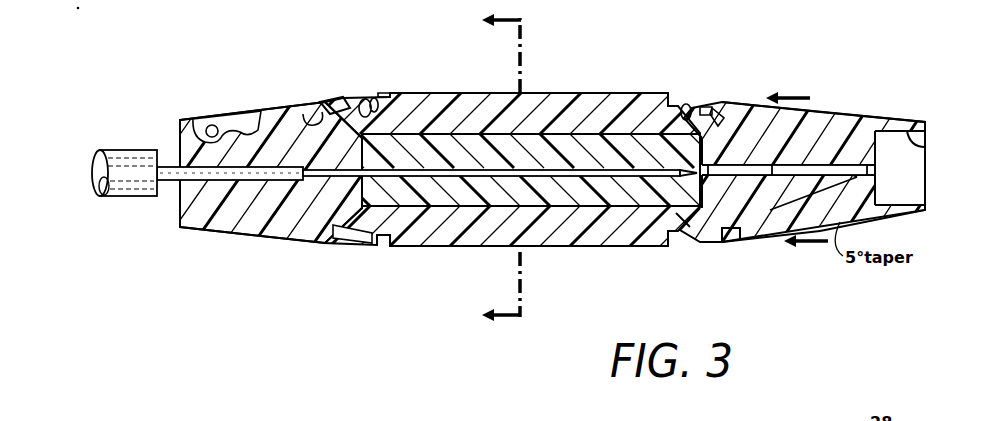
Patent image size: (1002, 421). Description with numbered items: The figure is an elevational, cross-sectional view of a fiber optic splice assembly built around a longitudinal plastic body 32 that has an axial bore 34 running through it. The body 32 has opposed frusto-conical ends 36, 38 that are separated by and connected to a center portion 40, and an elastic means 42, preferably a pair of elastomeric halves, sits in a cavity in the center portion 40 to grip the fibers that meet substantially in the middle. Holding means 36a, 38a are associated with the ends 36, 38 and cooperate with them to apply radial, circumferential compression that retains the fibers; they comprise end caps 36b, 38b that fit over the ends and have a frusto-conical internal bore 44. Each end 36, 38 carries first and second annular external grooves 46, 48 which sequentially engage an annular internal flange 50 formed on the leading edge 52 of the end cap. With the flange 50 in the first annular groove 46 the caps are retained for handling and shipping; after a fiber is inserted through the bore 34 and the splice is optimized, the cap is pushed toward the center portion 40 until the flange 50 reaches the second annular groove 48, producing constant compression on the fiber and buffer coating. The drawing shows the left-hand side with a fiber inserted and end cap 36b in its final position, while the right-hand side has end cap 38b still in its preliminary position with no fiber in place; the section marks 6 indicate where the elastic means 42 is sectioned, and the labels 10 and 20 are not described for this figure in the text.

The cable end 10 is at (162, 221).
The longitudinal body 32 is at (563, 88).
The axial bore 34 is at (690, 227).
The end 36 is at (292, 66).
The holding means 36a is at (258, 107).
The end cap 36b is at (338, 105).
The end 38 is at (869, 92).
The holding means 38a is at (901, 112).
The end cap 38b is at (837, 117).
The center portion 40 is at (638, 110).
The elastic means 42 is at (472, 142).
The frusto-conical internal bore 44 is at (218, 127).
The first annular external groove 46 is at (305, 120).
The second annular external groove 48 is at (358, 114).
The annular internal flange 50 is at (380, 99).
The leading edge 52 is at (369, 253).
The section line 6- 6 is at (494, 168).
The connector (FIG. 4) 20 is at (841, 417).